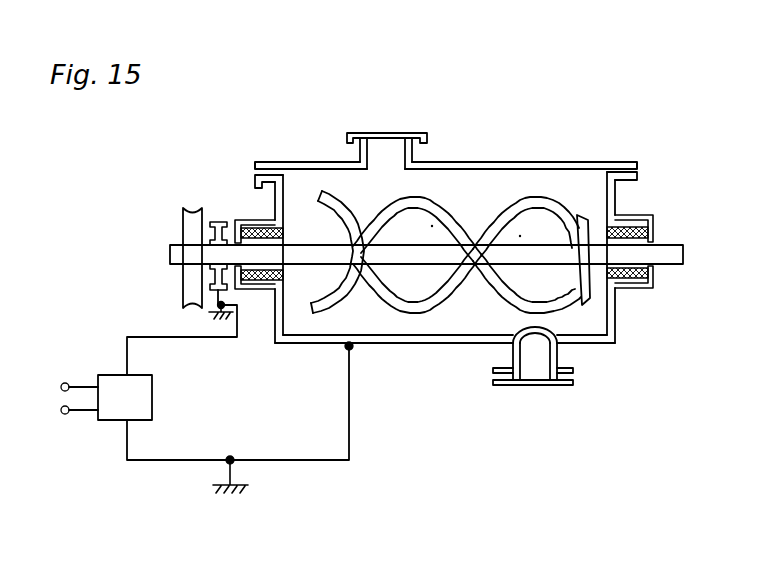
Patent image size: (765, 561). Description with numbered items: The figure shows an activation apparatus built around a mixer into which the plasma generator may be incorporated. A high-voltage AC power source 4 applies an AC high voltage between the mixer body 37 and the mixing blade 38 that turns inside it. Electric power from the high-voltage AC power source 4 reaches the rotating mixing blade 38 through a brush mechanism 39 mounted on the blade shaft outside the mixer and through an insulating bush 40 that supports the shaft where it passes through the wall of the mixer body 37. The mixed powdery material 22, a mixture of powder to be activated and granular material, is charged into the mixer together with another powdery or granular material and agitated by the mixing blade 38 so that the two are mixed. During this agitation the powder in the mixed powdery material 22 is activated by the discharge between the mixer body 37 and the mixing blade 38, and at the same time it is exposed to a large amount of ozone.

The high-voltage AC power source 4 is at (113, 422).
The mixed powdery material 22 is at (515, 237).
The mixer body 37 is at (590, 346).
The mixing blade 38 is at (540, 195).
The brush mechanism 39 is at (218, 221).
The insulating bush 40 is at (250, 222).